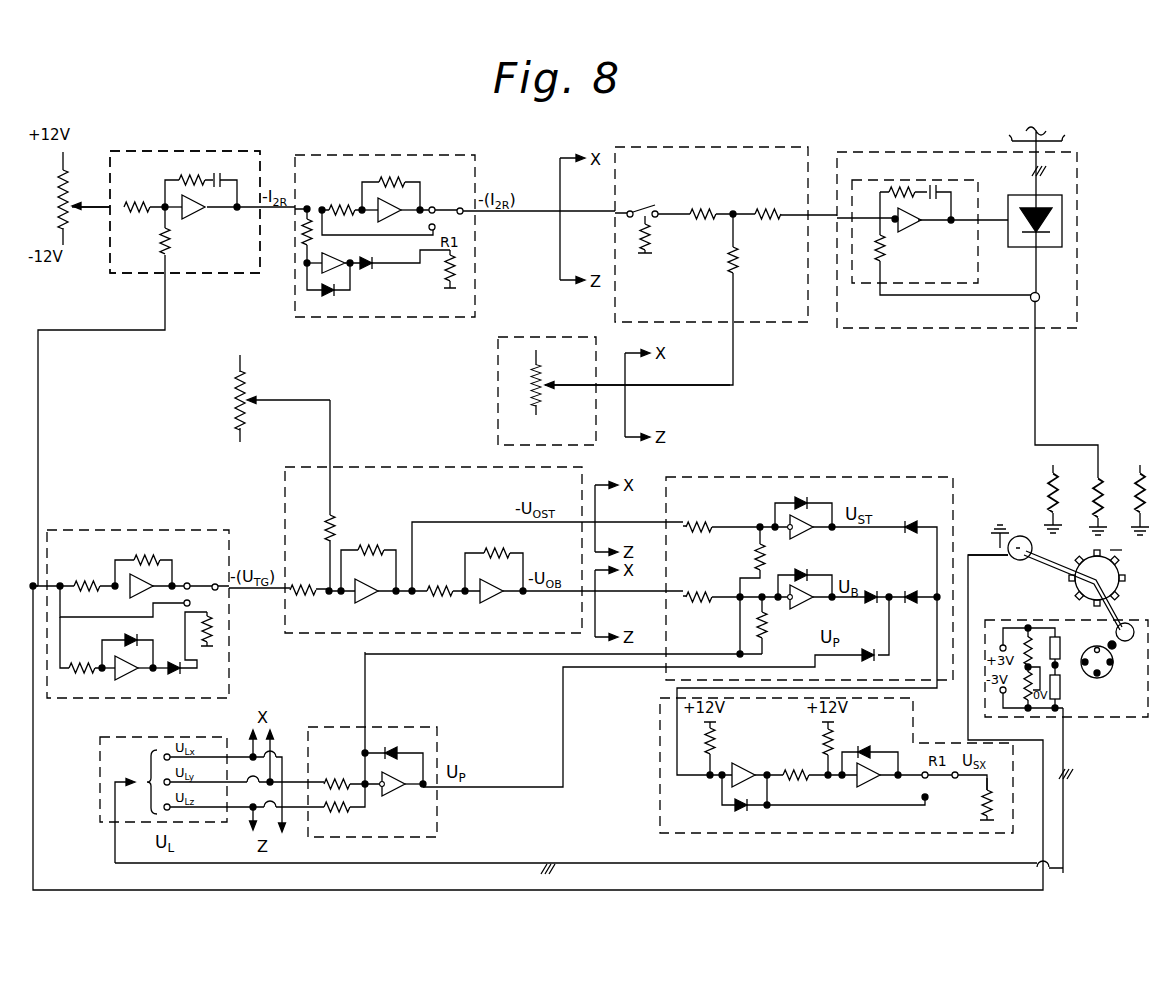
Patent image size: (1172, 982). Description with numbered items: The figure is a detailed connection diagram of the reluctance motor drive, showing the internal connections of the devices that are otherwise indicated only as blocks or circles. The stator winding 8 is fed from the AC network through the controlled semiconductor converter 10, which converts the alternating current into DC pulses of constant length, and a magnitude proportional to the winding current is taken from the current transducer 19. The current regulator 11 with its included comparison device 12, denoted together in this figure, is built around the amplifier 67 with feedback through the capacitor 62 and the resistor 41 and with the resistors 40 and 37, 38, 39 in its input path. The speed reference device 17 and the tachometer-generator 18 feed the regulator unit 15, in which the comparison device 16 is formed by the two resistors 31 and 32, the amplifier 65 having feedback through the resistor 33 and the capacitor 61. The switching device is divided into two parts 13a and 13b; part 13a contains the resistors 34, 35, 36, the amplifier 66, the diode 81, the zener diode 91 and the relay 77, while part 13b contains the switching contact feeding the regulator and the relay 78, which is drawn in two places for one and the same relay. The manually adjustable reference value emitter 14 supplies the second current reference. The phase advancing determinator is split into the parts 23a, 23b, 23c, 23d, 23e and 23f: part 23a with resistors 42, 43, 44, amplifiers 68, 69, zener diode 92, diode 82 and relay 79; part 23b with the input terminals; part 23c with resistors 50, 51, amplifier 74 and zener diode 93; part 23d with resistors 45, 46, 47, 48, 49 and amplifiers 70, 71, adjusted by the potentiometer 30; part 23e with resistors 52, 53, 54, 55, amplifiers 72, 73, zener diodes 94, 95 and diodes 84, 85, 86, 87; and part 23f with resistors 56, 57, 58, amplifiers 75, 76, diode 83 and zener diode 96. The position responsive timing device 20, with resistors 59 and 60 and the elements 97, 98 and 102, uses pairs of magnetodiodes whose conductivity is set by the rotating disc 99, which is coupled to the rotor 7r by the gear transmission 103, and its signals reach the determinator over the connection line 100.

The reference device 17 is at (55, 203).
The resistor 31 is at (137, 197).
The resistor 32 is at (151, 230).
The resistor 33 is at (189, 180).
The capacitor 61 is at (218, 178).
The amplifier 65 is at (188, 216).
The regulator unit 15 is at (160, 152).
The comparison device 16 is at (185, 212).
The switching device part 13a is at (322, 157).
The resistor 34 is at (300, 232).
The resistor 35 is at (342, 196).
The resistor 36 is at (391, 183).
The amplifier 66 is at (391, 218).
The diode 81 is at (378, 269).
The zenerdiode 91 is at (328, 287).
The relay 77 is at (462, 266).
The switching device part 13b is at (630, 150).
The resistor 37 is at (703, 200).
The resistor 38 is at (656, 299).
The resistor 39 is at (768, 200).
The relay 78 is at (652, 242).
The regulator 11 is at (865, 195).
The comparison device 12 is at (915, 231).
The resistor 41 is at (903, 196).
The capacitor 62 is at (934, 184).
The amplifier 67 is at (912, 231).
The resistor 40 is at (876, 262).
The controlled semiconductor converter 10 is at (1082, 211).
The current transducer 19 is at (1040, 294).
The potentiometer 30 is at (232, 400).
The manually adjustable reference value emitter 14 is at (497, 384).
The phase advancing determinator part 23a is at (75, 525).
The resistor 42 is at (86, 576).
The resistor 43 is at (143, 560).
The amplifier 68 is at (122, 596).
The resistor 44 is at (81, 657).
The amplifier 69 is at (135, 678).
The zenerdiode 92 is at (125, 641).
The diode 82 is at (185, 656).
The relay 79 is at (217, 628).
The phase advancing determinator part 23d is at (385, 460).
The resistor 45 is at (302, 601).
The resistor 46 is at (314, 552).
The resistor 47 is at (368, 557).
The resistor 48 is at (440, 579).
The resistor 49 is at (494, 558).
The amplifier 70 is at (371, 601).
The amplifier 71 is at (493, 601).
The phase advancing determinator part 23e is at (705, 470).
The resistor 52 is at (699, 513).
The resistor 53 is at (699, 583).
The resistor 54 is at (747, 590).
The resistor 55 is at (581, 625).
The amplifier 73 is at (814, 534).
The amplifier 72 is at (814, 601).
The zenerdiode 94 is at (805, 498).
The zenerdiode 95 is at (806, 569).
The diode 84 is at (912, 513).
The diode 85 is at (878, 584).
The diode 86 is at (918, 584).
The diode 87 is at (656, 692).
The phase advancing determinator part 23b is at (127, 731).
The phase advancing determinator part 23c is at (335, 720).
The resistor 50 is at (336, 771).
The resistor 51 is at (336, 815).
The amplifier 74 is at (401, 795).
The zenerdiode 93 is at (390, 755).
The phase advancing determinator part 23f is at (700, 833).
The resistor 56 is at (697, 748).
The resistor 57 is at (796, 761).
The resistor 58 is at (822, 745).
The amplifier 75 is at (748, 764).
The amplifier 76 is at (877, 785).
The diode 83 is at (866, 748).
The zenerdiode 96 is at (745, 810).
The stator winding 8 is at (1047, 492).
The tachometer-generator 18 is at (1032, 545).
The rotor 7r is at (1121, 575).
The coil 102 is at (1095, 642).
The gear transmission 103 is at (1108, 655).
The rotating disc 99 is at (1095, 679).
The position responsive means 20 is at (1140, 717).
The resistor 59 is at (1030, 650).
The resistor 60 is at (1032, 690).
The resistor 98 is at (1053, 636).
The resistor 97 is at (1062, 702).
The connection line 100 is at (1066, 802).